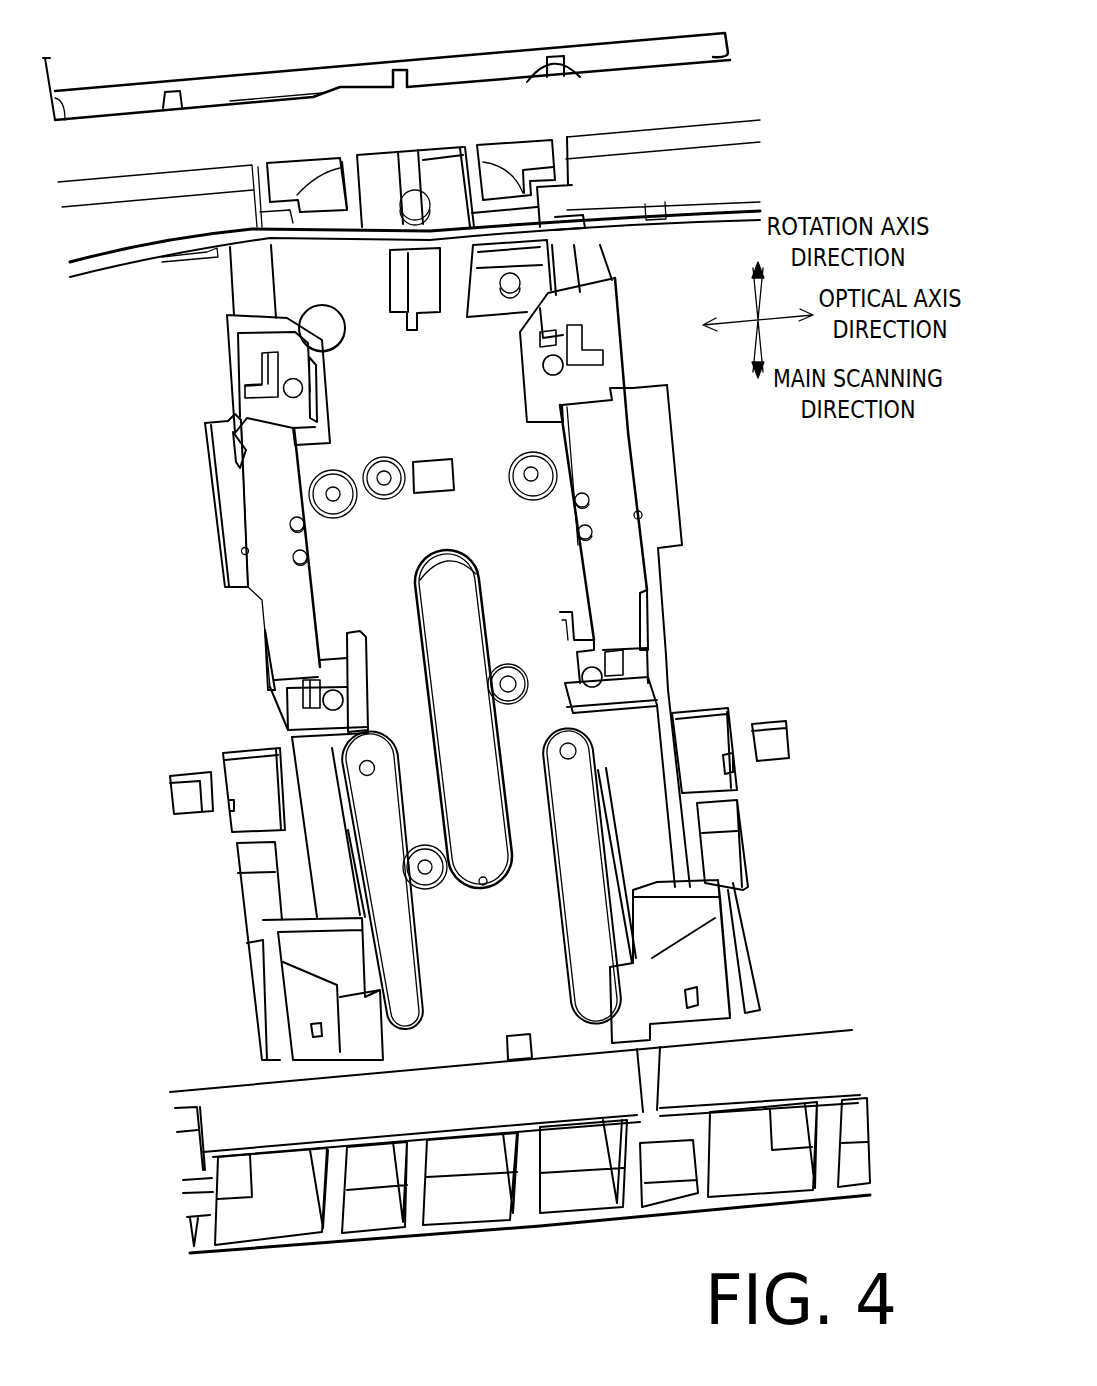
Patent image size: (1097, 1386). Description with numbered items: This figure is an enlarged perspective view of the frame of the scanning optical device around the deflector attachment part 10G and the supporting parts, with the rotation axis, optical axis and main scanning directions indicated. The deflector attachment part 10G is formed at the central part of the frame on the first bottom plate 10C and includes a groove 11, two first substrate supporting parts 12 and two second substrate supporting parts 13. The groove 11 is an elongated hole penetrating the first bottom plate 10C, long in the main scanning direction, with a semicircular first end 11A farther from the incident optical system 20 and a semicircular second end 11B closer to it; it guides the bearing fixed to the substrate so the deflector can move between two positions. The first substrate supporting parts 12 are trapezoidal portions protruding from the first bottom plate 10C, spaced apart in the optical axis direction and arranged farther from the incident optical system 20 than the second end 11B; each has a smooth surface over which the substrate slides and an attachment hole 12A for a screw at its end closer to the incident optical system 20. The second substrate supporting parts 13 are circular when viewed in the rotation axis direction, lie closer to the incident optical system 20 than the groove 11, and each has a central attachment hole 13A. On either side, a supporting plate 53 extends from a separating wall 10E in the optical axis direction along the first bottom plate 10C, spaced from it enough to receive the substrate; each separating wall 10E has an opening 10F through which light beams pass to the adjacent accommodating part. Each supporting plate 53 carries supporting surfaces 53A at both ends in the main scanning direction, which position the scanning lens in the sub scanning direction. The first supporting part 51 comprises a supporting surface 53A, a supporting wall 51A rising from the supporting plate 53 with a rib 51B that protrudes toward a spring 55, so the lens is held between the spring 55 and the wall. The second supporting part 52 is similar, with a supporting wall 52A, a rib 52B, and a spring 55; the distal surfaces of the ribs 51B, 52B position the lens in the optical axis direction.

The incident optical system 20 is at (352, 87).
The supporting wall 52A is at (522, 340).
The rib 52B is at (262, 378).
The spring 55 is at (264, 356).
The supporting surface 53A is at (302, 389).
The second supporting part 52 is at (507, 355).
The second substrate supporting part 13 is at (335, 477).
The attachment hole 13A is at (340, 497).
The opening 10F is at (652, 461).
The first bottom plate 10C is at (600, 517).
The supporting plate 53 is at (263, 504).
The deflector attachment part 10G is at (337, 535).
The second end 11B is at (443, 567).
The rib 51B is at (345, 683).
The supporting wall 51A is at (560, 648).
The first supporting part 51 is at (377, 697).
The attachment hole 12A is at (374, 764).
The separating wall 10E is at (308, 812).
The groove 11 is at (449, 776).
The first end 11A is at (487, 885).
The first substrate supporting part 12 is at (400, 950).